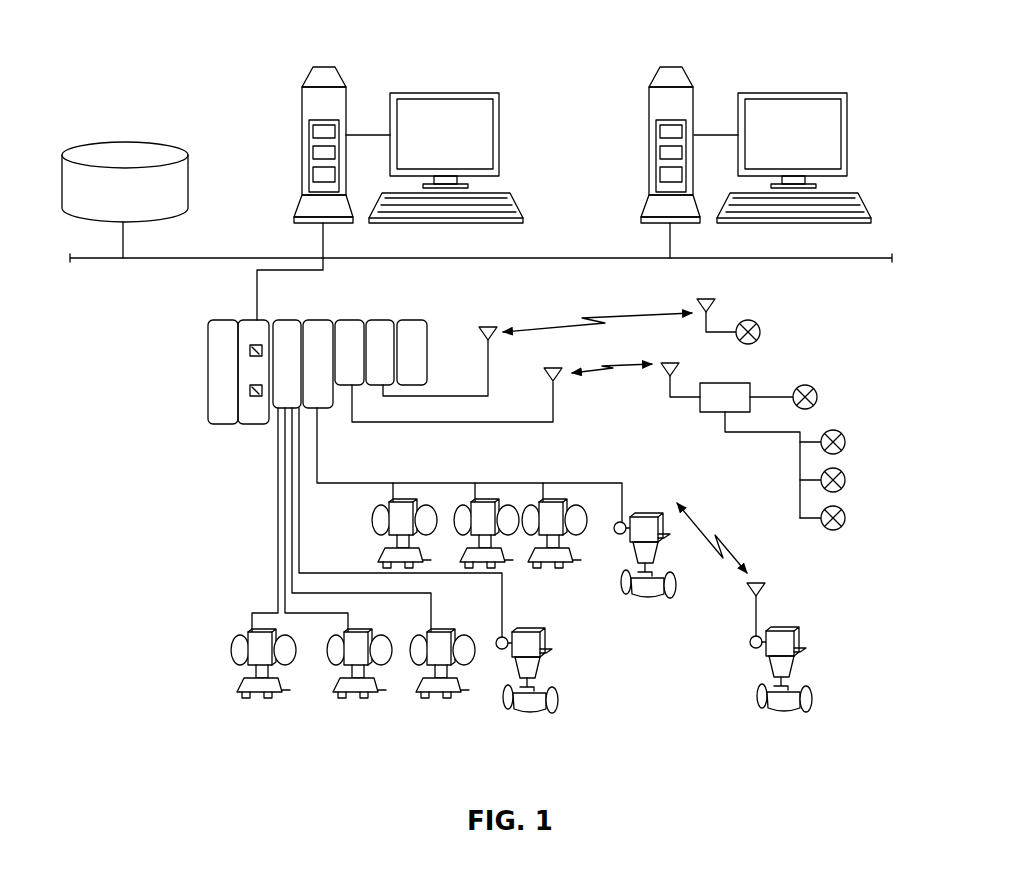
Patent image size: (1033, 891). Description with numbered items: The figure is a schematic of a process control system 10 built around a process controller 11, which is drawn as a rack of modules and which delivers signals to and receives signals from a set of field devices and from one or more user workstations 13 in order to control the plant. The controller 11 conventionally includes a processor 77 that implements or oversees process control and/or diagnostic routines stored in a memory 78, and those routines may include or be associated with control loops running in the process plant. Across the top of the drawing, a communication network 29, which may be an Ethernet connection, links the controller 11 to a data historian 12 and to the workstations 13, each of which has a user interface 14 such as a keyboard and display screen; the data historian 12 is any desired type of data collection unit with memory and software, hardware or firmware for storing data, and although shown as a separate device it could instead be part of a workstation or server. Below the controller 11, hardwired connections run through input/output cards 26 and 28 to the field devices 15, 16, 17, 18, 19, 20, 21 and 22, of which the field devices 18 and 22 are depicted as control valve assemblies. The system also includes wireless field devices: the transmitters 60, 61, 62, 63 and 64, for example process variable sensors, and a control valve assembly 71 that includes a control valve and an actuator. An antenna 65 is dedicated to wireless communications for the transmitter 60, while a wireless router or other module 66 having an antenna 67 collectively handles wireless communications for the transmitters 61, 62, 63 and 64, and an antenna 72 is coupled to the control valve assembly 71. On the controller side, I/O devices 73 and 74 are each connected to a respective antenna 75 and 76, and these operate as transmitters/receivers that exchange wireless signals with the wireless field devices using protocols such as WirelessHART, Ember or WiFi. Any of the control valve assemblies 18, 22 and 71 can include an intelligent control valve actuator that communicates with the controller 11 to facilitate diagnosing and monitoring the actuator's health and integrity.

The process control system 10 is at (575, 32).
The process controller 11 is at (215, 358).
The data historian 12 is at (187, 185).
The user workstation 13 is at (300, 101).
The user interface 14 is at (500, 137).
The field device 15 is at (240, 660).
The field device 16 is at (336, 660).
The field device 17 is at (419, 660).
The field device 18 is at (517, 660).
The field device 19 is at (396, 496).
The field device 20 is at (478, 496).
The field device 21 is at (547, 496).
The field device 22 is at (648, 512).
The input/output card 26 is at (285, 332).
The input/output card 28 is at (316, 332).
The communication network 29 is at (185, 263).
The wireless field device 60 is at (759, 324).
The wireless field device 61 is at (817, 390).
The wireless field device 62 is at (845, 435).
The wireless field device 63 is at (845, 473).
The wireless field device 64 is at (845, 511).
The antenna 65 is at (717, 305).
The wireless router 66 is at (708, 416).
The antenna 67 is at (680, 378).
The control valve assembly 71 is at (803, 661).
The antenna 72 is at (766, 591).
The I/O device 73 is at (350, 332).
The I/O device 74 is at (381, 332).
The antenna 75 is at (556, 411).
The antenna 76 is at (490, 366).
The processor 77 is at (249, 351).
The memory 78 is at (249, 389).